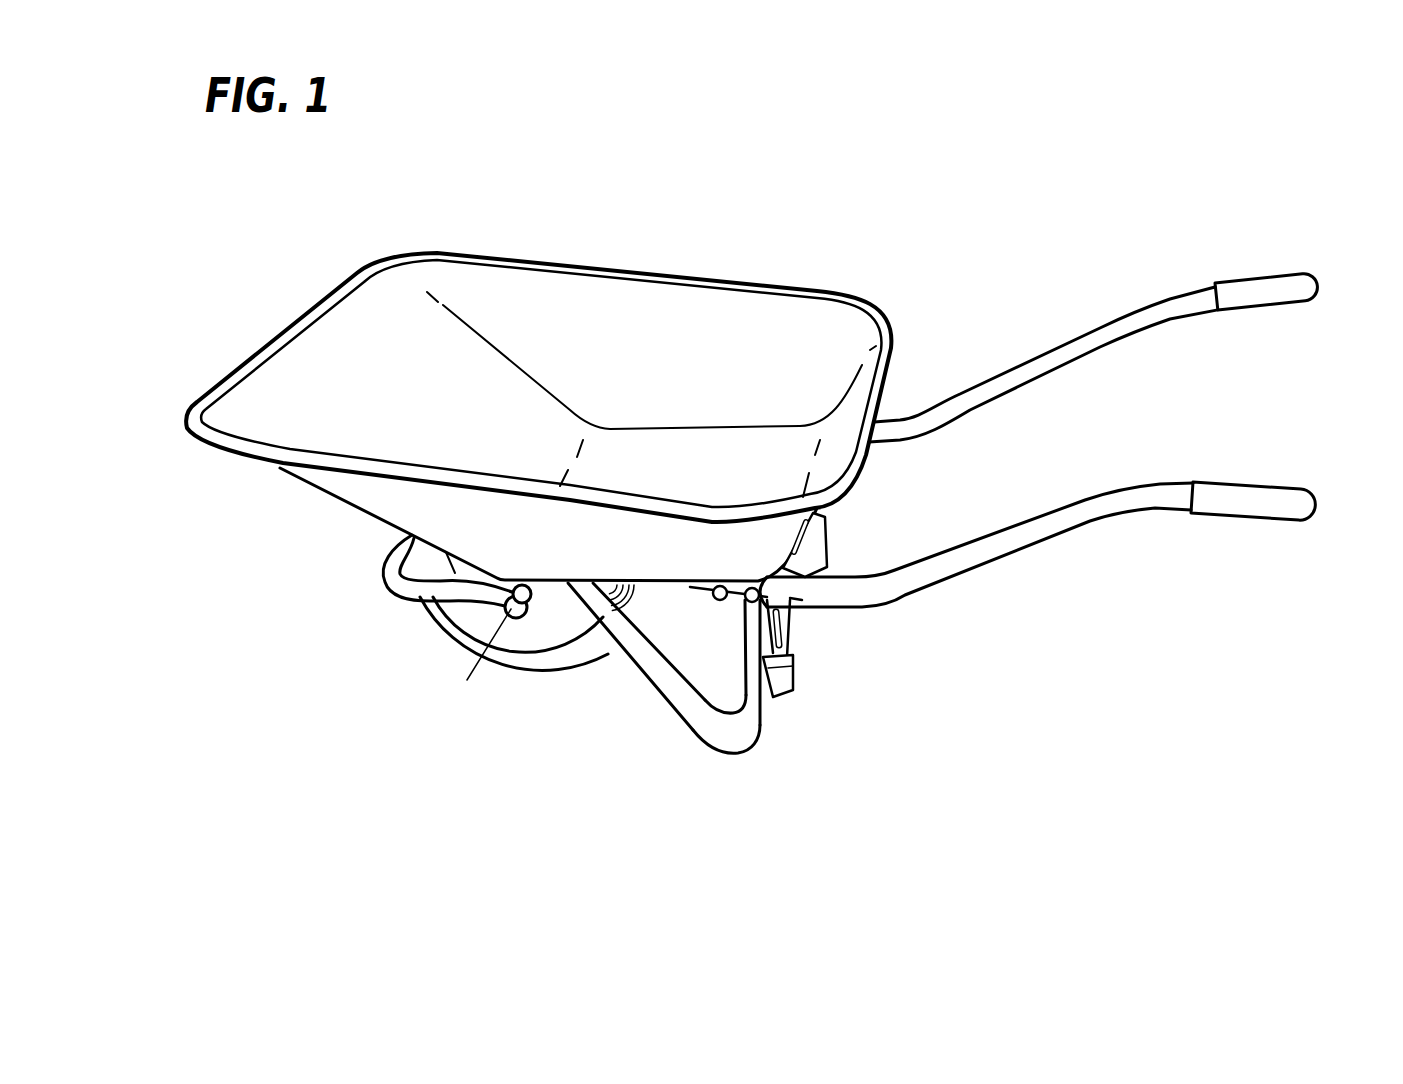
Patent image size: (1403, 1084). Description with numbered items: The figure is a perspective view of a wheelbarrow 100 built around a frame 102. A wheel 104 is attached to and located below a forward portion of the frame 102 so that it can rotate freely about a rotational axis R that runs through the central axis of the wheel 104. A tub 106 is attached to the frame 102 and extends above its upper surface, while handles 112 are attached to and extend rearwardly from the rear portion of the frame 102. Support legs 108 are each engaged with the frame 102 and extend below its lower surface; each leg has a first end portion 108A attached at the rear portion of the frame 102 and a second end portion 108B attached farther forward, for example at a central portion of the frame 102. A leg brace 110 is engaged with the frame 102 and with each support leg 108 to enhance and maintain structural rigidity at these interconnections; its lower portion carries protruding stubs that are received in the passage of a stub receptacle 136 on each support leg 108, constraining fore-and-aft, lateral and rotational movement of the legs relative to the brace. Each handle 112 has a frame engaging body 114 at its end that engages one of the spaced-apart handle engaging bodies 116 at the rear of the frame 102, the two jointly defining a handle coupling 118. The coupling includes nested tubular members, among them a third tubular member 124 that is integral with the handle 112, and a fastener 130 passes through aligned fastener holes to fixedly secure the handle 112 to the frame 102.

The wheelbarrow 100 is at (795, 157).
The frame 102 is at (387, 553).
The wheel 104 is at (573, 657).
The tub 106 is at (290, 320).
The support legs 108 is at (713, 743).
The first end portion 108A is at (750, 613).
The second end portion 108B is at (593, 597).
The leg brace 110 is at (827, 528).
The handles 112 is at (1157, 313).
The frame engaging body 114 is at (797, 597).
The handle engaging bodies 116 is at (720, 602).
The handle coupling 118 is at (787, 603).
The third tubular member 124 is at (793, 600).
The fastener 130 is at (733, 600).
The stub receptacle 136 is at (780, 607).
The rotational axis R is at (470, 663).